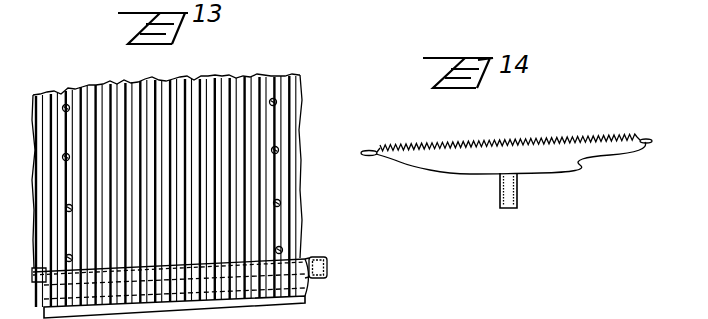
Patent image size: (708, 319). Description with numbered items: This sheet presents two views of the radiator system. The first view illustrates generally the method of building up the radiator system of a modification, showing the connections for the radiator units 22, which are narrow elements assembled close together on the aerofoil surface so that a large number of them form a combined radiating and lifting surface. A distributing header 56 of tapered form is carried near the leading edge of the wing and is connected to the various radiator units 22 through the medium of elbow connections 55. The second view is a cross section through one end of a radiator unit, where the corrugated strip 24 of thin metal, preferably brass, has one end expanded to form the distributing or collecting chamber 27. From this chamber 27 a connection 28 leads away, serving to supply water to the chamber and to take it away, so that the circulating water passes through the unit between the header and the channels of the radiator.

In FIG. 13, the radiator unit 22 is at (228, 80).
In FIG. 13, the elbow connection 55 is at (304, 293).
In FIG. 13, the distributing header 56 is at (318, 258).
In FIG. 14, the corrugated strip 24 is at (462, 174).
In FIG. 14, the distributing chamber 27 is at (567, 160).
In FIG. 14, the connection 28 is at (512, 208).